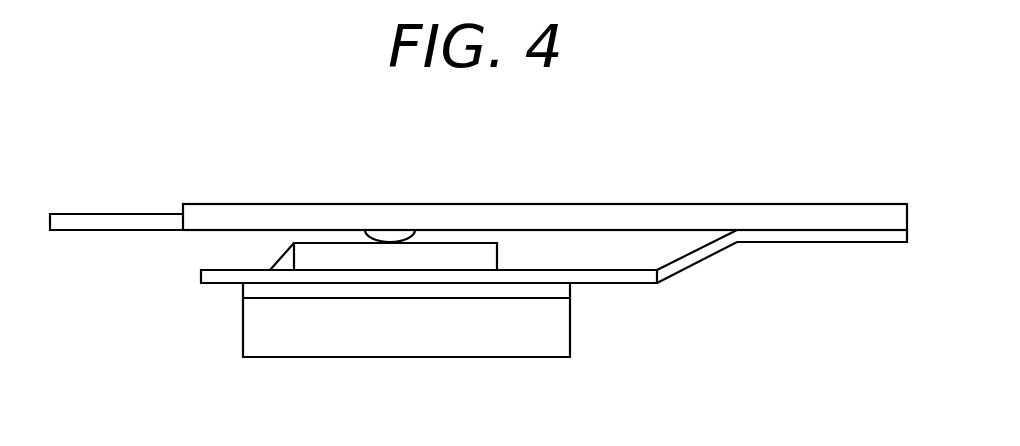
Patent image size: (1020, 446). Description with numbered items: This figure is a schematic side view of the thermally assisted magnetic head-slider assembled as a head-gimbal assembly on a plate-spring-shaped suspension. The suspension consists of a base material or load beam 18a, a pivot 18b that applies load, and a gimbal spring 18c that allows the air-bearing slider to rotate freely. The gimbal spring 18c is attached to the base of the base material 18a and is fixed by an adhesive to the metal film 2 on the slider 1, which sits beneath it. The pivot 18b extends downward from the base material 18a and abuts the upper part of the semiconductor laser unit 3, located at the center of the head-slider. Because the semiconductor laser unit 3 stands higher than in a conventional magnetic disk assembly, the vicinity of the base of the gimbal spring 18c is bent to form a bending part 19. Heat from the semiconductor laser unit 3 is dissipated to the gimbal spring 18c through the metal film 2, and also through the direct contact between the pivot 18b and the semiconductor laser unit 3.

The semiconductor element / chip 1 is at (497, 317).
The metal film 2 is at (550, 293).
The semiconductor laser unit 3 is at (428, 257).
The base material (load beam) 18a is at (235, 222).
The pivot 18b is at (390, 235).
The gimbal spring 18c is at (217, 283).
The bending part 19 is at (695, 257).